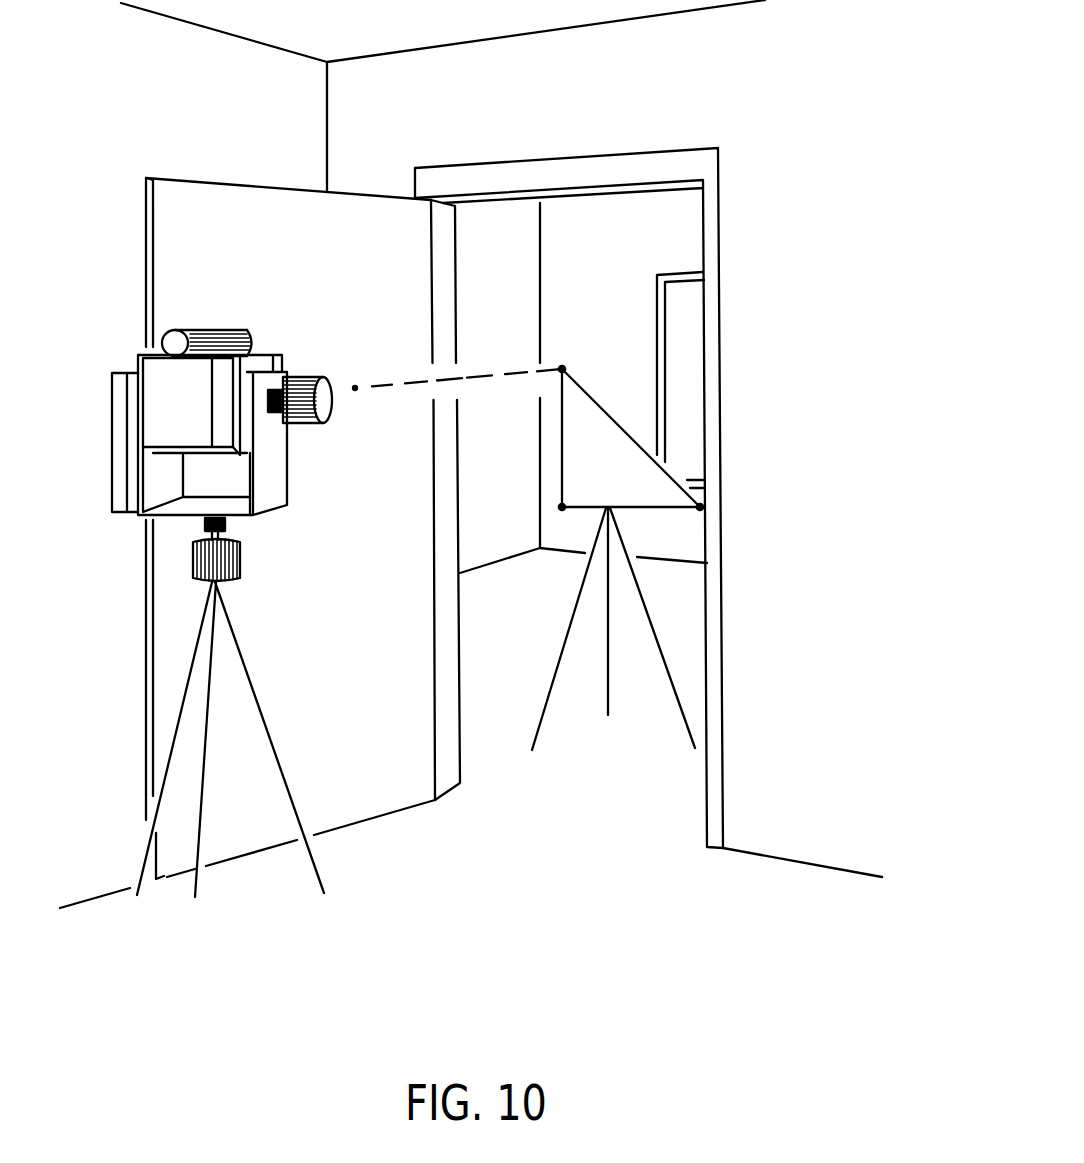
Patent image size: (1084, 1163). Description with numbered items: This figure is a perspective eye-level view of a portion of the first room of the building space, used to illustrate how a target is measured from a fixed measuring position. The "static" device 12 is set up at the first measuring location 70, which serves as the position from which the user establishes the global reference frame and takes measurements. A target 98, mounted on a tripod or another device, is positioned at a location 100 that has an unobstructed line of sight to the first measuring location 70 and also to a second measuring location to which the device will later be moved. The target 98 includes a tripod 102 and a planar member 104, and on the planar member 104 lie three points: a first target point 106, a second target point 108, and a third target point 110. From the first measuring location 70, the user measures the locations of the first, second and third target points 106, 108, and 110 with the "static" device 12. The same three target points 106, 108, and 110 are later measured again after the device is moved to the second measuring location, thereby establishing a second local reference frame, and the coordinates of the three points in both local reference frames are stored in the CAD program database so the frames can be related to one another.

The static device 12 is at (88, 448).
The first measuring location 70 is at (160, 934).
The target 98 is at (538, 599).
The location 100 is at (586, 680).
The tripod 102 is at (553, 681).
The planar member 104 is at (585, 433).
The first target point 106 is at (562, 369).
The second target point 108 is at (700, 510).
The third target point 110 is at (562, 507).